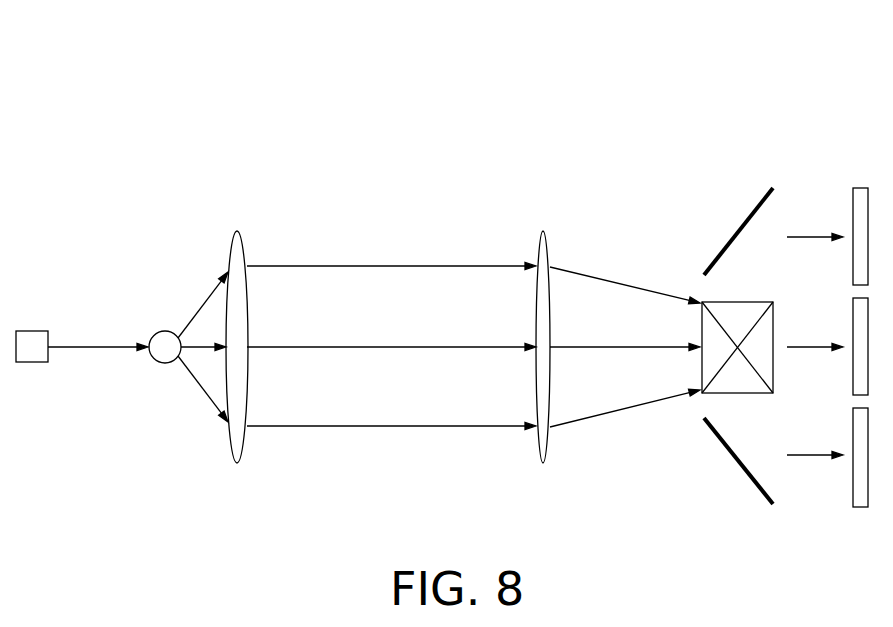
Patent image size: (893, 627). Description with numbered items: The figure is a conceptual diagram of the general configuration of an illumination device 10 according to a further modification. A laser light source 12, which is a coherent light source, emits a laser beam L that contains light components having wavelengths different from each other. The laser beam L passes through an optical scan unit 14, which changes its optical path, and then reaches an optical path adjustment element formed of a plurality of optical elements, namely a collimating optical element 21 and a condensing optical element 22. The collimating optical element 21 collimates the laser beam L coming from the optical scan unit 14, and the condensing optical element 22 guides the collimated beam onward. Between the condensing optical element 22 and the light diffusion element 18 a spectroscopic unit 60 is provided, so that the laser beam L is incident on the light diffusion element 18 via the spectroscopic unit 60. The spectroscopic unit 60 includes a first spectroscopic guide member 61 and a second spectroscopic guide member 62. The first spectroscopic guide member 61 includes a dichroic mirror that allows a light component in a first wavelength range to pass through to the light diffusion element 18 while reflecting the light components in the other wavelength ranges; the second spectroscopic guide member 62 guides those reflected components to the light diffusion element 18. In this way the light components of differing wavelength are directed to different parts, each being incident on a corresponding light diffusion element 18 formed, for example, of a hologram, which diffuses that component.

The illumination device 10 is at (655, 73).
The laser light source 12 is at (32, 334).
The laser beam L is at (89, 345).
The optical scan unit 14 is at (166, 332).
The collimating optical element 21 is at (237, 232).
The condensing optical element 22 is at (543, 232).
The spectroscopic unit 60 is at (745, 308).
The first spectroscopic guide member 61 is at (738, 302).
The second spectroscopic guide member 62 is at (734, 235).
The light diffusion element 18 is at (862, 178).